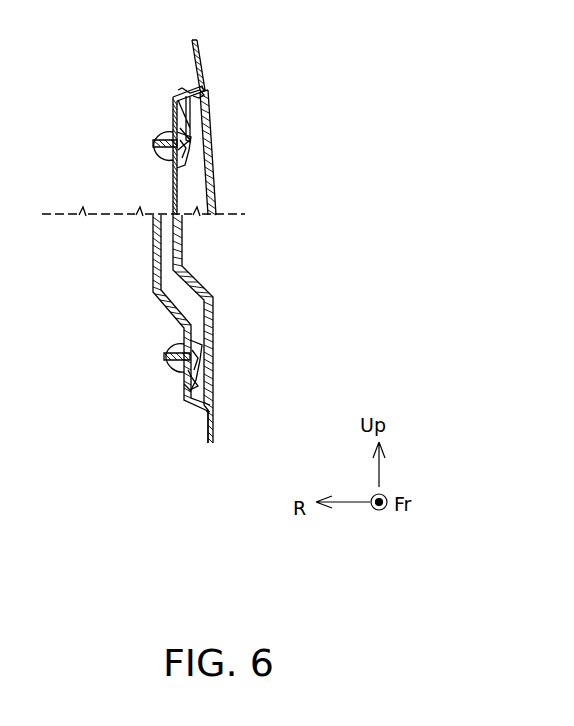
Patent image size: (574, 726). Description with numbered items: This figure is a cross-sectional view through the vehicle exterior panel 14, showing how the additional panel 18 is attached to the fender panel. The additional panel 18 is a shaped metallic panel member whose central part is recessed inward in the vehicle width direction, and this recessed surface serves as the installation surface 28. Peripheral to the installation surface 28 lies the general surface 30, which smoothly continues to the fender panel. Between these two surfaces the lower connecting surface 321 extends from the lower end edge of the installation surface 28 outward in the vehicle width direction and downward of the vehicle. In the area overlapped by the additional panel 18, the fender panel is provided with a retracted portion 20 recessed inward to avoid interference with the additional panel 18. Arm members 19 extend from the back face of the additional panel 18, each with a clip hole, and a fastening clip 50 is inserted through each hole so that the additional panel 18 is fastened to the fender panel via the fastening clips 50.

The exterior panel 14 is at (197, 62).
The additional panel 18 is at (246, 199).
The arm member 19 is at (188, 115).
The retracted portion 20 is at (173, 106).
The installation surface 28 is at (187, 237).
The general surface 30 is at (213, 347).
The fastening clip 50 is at (162, 155).
The lower connecting surface 321 is at (197, 283).